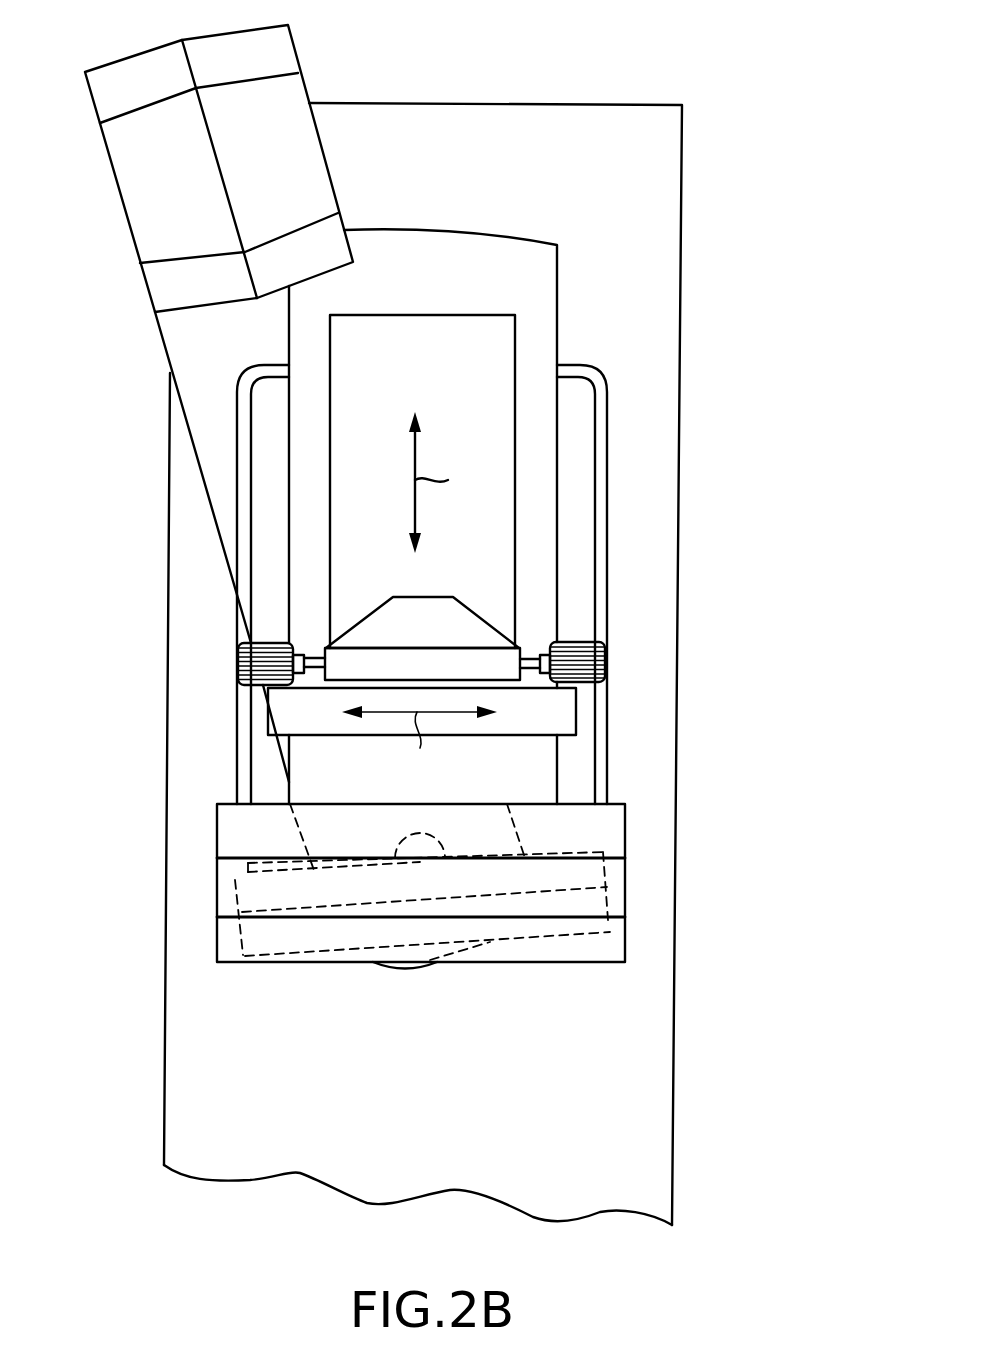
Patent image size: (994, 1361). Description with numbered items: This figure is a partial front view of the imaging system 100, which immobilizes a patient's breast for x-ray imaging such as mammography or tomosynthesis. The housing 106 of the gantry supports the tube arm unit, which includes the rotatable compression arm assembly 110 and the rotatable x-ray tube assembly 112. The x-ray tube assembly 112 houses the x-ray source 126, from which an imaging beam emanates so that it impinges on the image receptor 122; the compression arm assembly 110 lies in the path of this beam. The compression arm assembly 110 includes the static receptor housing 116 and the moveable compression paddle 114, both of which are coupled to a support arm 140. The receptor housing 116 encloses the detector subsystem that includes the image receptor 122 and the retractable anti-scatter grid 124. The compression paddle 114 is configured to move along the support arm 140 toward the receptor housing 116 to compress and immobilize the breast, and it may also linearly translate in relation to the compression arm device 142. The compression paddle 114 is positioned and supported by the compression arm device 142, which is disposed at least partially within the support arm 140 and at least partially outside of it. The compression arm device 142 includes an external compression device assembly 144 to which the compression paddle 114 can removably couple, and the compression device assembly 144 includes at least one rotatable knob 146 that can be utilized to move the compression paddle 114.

The imaging system 100 is at (730, 54).
The housing 106 is at (667, 160).
The compression arm assembly 110 is at (545, 287).
The x-ray tube assembly 112 is at (140, 213).
The compression paddle 114 is at (572, 710).
The receptor housing 116 is at (620, 828).
The image receptor 122 is at (242, 928).
The retractable anti-scatter grid 124 is at (248, 865).
The x-ray source 126 is at (238, 305).
The support arm 140 is at (558, 347).
The compression arm device 142 is at (346, 617).
The external compression device assembly 144 is at (483, 614).
The rotatable knob 146 is at (597, 658).